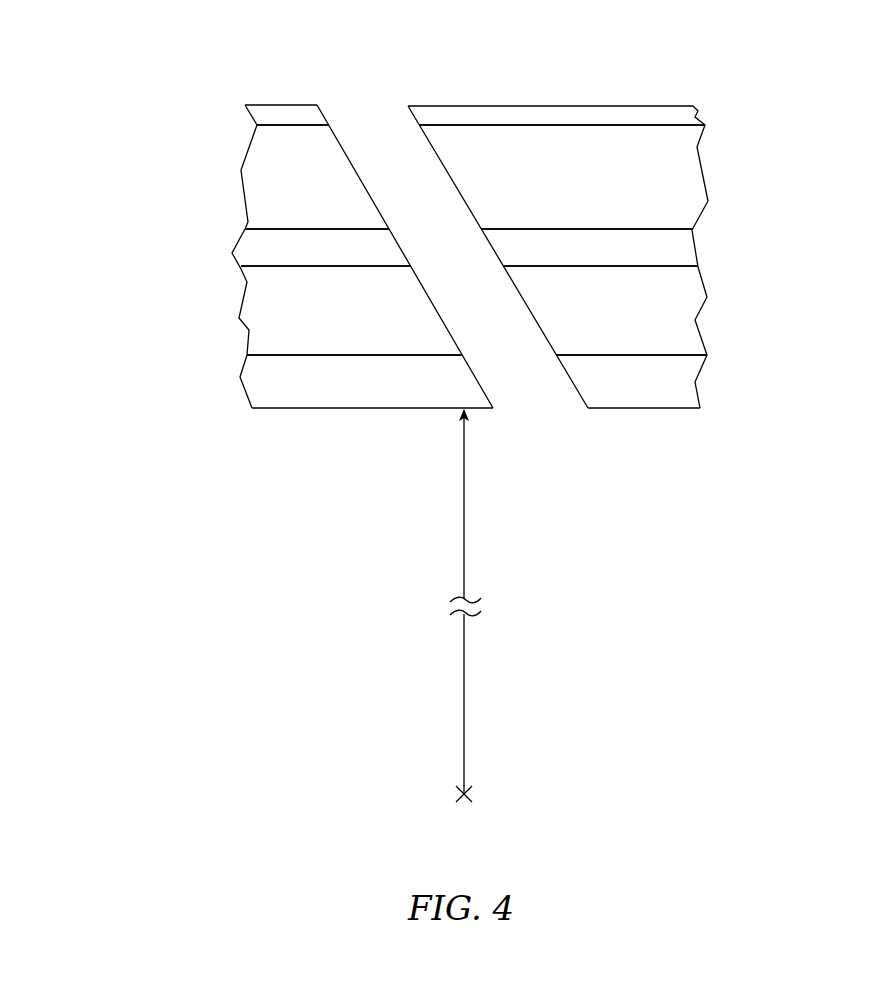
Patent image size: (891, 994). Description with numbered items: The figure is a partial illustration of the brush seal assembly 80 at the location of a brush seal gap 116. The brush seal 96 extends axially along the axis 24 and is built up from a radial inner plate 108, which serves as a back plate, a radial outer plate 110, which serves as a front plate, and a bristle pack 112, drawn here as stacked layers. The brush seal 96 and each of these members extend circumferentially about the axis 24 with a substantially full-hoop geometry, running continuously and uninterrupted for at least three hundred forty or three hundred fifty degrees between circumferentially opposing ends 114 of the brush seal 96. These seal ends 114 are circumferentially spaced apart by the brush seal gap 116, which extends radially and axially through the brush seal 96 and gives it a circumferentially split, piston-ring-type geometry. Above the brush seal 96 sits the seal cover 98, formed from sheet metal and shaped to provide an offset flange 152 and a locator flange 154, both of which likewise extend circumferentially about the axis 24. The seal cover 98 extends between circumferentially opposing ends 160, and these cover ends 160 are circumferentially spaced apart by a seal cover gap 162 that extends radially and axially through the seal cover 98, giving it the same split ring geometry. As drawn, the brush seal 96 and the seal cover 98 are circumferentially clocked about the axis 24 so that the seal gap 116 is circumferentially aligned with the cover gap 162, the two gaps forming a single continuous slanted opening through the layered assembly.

The axis 24 is at (458, 793).
The assembly 80 is at (784, 97).
The brush seal 96 is at (722, 295).
The seal cover 98 is at (685, 91).
The radial inner plate 108 is at (242, 377).
The radial outer plate 110 is at (233, 243).
The bristle pack 112 is at (238, 312).
The circumferentially opposing ends of the brush seal 114 is at (483, 383).
The brush seal gap 116 is at (514, 347).
The offset flange 152 is at (240, 168).
The locator flange 154 is at (256, 125).
The circumferentially opposing ends of the seal cover 160 is at (425, 145).
The seal cover gap 162 is at (430, 201).